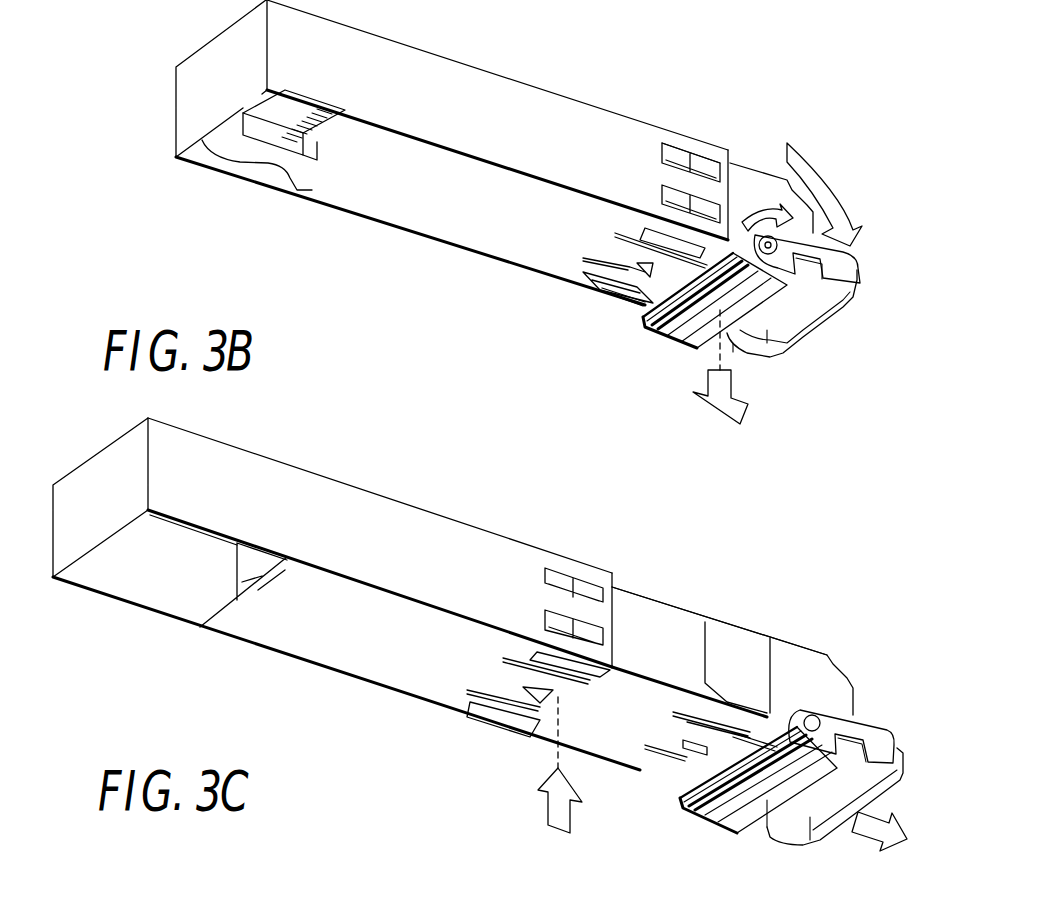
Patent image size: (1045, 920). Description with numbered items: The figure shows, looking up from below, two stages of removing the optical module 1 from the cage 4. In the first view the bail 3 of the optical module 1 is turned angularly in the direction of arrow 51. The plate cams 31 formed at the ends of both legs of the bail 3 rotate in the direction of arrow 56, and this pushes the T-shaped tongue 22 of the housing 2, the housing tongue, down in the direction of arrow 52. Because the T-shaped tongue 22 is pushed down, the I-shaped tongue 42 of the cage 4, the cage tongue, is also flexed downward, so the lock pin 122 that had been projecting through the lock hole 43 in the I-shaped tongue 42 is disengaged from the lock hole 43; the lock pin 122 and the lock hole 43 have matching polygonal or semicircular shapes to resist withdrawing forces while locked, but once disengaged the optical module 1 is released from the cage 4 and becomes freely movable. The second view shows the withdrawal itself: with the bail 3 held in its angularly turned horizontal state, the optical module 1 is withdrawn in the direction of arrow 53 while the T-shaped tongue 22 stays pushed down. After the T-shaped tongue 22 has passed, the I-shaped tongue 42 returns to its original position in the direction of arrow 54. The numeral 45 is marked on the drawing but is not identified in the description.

In FIG. 3C, the optical module 1 is at (685, 587).
In FIG. 3B, the housing 2 is at (282, 165).
In FIG. 3B, the bail 3 is at (800, 320).
In FIG. 3C, the bail 3 is at (873, 733).
In FIG. 3B, the cage 4 is at (528, 113).
In FIG. 3C, the cage 4 is at (320, 515).
In FIG. 3B, the T-shaped tongue 22 is at (673, 317).
In FIG. 3C, the T-shaped tongue 22 is at (697, 813).
In FIG. 3B, the plate cams 31 is at (780, 260).
In FIG. 3B, the I-shaped tongue 42 is at (630, 255).
In FIG. 3C, the I-shaped tongue 42 is at (507, 680).
In FIG. 3B, the lock hole 43 is at (627, 300).
In FIG. 3B, the cage window 45 is at (692, 81).
In FIG. 3B, the arrow 51 is at (817, 180).
In FIG. 3B, the arrow 52 is at (742, 422).
In FIG. 3C, the arrow 53 is at (877, 850).
In FIG. 3C, the arrow 54 is at (567, 800).
In FIG. 3B, the arrow 56 is at (778, 205).
In FIG. 3B, the lock pin 122 is at (640, 268).